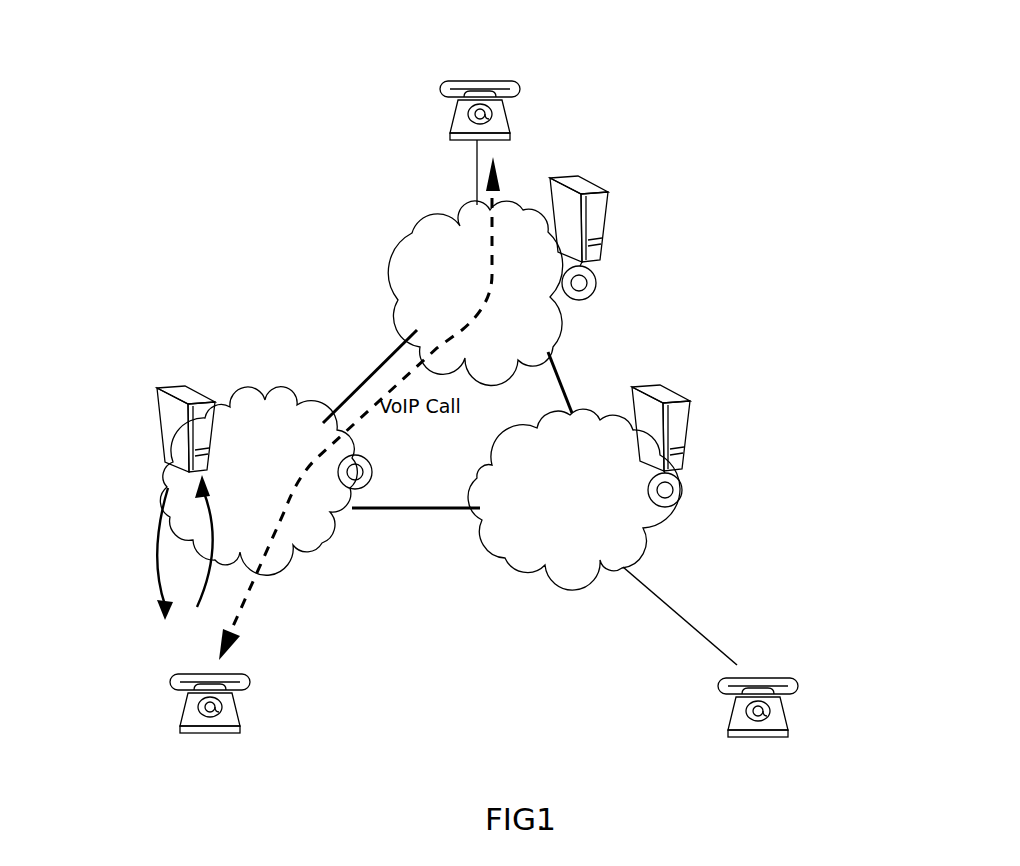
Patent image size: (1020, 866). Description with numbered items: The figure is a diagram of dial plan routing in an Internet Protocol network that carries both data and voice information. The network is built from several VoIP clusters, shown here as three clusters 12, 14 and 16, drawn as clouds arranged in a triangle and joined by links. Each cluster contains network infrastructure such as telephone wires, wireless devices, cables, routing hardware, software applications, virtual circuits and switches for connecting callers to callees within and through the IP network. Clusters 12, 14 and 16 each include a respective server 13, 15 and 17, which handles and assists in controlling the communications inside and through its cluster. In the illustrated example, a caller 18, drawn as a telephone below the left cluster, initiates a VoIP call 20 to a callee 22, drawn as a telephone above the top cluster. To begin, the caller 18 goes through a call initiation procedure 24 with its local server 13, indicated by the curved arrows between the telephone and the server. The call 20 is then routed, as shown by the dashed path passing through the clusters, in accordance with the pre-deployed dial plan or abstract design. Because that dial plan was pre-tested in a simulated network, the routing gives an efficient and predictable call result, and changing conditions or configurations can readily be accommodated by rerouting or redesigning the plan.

The VoIP cluster 12 is at (318, 550).
The server 13 is at (195, 392).
The VoIP cluster 14 is at (413, 230).
The server 15 is at (610, 200).
The VoIP cluster 16 is at (640, 530).
The server 17 is at (687, 413).
The caller 18 is at (248, 680).
The VoIP call 20 is at (360, 442).
The callee 22 is at (510, 80).
The call initiation procedure 24 is at (100, 610).